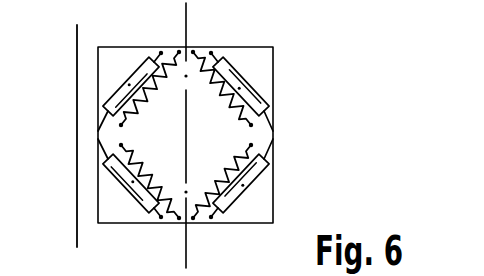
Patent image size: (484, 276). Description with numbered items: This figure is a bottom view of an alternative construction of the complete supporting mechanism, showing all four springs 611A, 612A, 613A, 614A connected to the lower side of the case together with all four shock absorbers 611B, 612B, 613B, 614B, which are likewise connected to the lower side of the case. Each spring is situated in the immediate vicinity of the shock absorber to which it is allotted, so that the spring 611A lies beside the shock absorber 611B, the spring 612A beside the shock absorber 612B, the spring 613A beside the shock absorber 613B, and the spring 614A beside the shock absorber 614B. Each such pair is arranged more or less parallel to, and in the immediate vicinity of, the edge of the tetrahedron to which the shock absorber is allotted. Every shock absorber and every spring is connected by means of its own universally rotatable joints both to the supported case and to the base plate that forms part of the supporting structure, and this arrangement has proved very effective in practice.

The spring 611A is at (227, 97).
The shock absorber 611B is at (247, 80).
The spring 612A is at (145, 97).
The shock absorber 612B is at (124, 86).
The spring 613A is at (156, 165).
The shock absorber 613B is at (132, 198).
The spring 614A is at (226, 175).
The shock absorber 614B is at (245, 193).